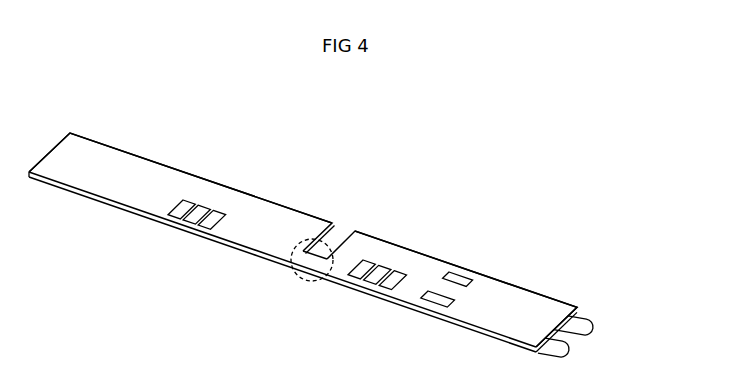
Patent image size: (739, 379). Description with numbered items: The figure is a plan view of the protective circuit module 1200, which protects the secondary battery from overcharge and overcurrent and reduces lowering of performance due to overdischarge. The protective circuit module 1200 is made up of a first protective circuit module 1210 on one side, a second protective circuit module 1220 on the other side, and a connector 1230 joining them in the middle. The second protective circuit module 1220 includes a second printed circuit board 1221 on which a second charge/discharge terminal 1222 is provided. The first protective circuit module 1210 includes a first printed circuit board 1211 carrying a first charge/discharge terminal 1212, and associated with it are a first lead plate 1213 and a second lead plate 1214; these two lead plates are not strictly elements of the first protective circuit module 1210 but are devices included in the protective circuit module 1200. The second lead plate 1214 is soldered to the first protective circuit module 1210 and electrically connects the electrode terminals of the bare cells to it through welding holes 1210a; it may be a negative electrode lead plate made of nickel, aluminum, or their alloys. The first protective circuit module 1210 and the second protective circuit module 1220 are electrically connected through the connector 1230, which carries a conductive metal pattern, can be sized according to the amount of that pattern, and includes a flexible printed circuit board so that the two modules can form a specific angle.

The protective circuit module 1200 is at (592, 130).
The first protective circuit module 1210 is at (470, 220).
The welding holes 1210a is at (466, 270).
The first printed circuit board 1211 is at (512, 288).
The first charge/discharge terminal 1212 is at (373, 283).
The first lead plate 1213 is at (592, 323).
The second lead plate 1214 is at (432, 301).
The second protective circuit module 1220 is at (181, 143).
The second printed circuit board 1221 is at (237, 202).
The second charge/discharge terminal 1222 is at (172, 217).
The connector 1230 is at (293, 280).